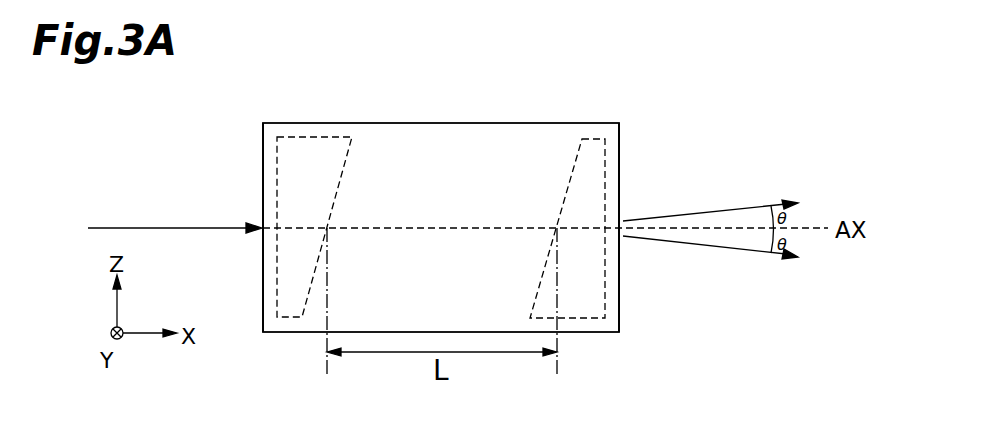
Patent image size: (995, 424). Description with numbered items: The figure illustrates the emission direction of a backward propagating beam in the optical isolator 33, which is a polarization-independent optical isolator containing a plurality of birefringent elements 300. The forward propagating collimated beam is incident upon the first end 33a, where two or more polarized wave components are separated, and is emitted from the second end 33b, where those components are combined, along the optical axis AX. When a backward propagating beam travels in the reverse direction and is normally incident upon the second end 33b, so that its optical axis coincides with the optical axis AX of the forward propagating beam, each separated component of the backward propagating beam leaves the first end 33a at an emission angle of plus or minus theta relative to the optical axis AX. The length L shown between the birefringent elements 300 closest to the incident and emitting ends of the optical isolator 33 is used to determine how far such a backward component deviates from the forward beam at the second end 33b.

The optical isolator 33 is at (570, 123).
The first end 33a is at (620, 143).
The second end 33b is at (262, 143).
The birefringent elements 300 is at (277, 175).